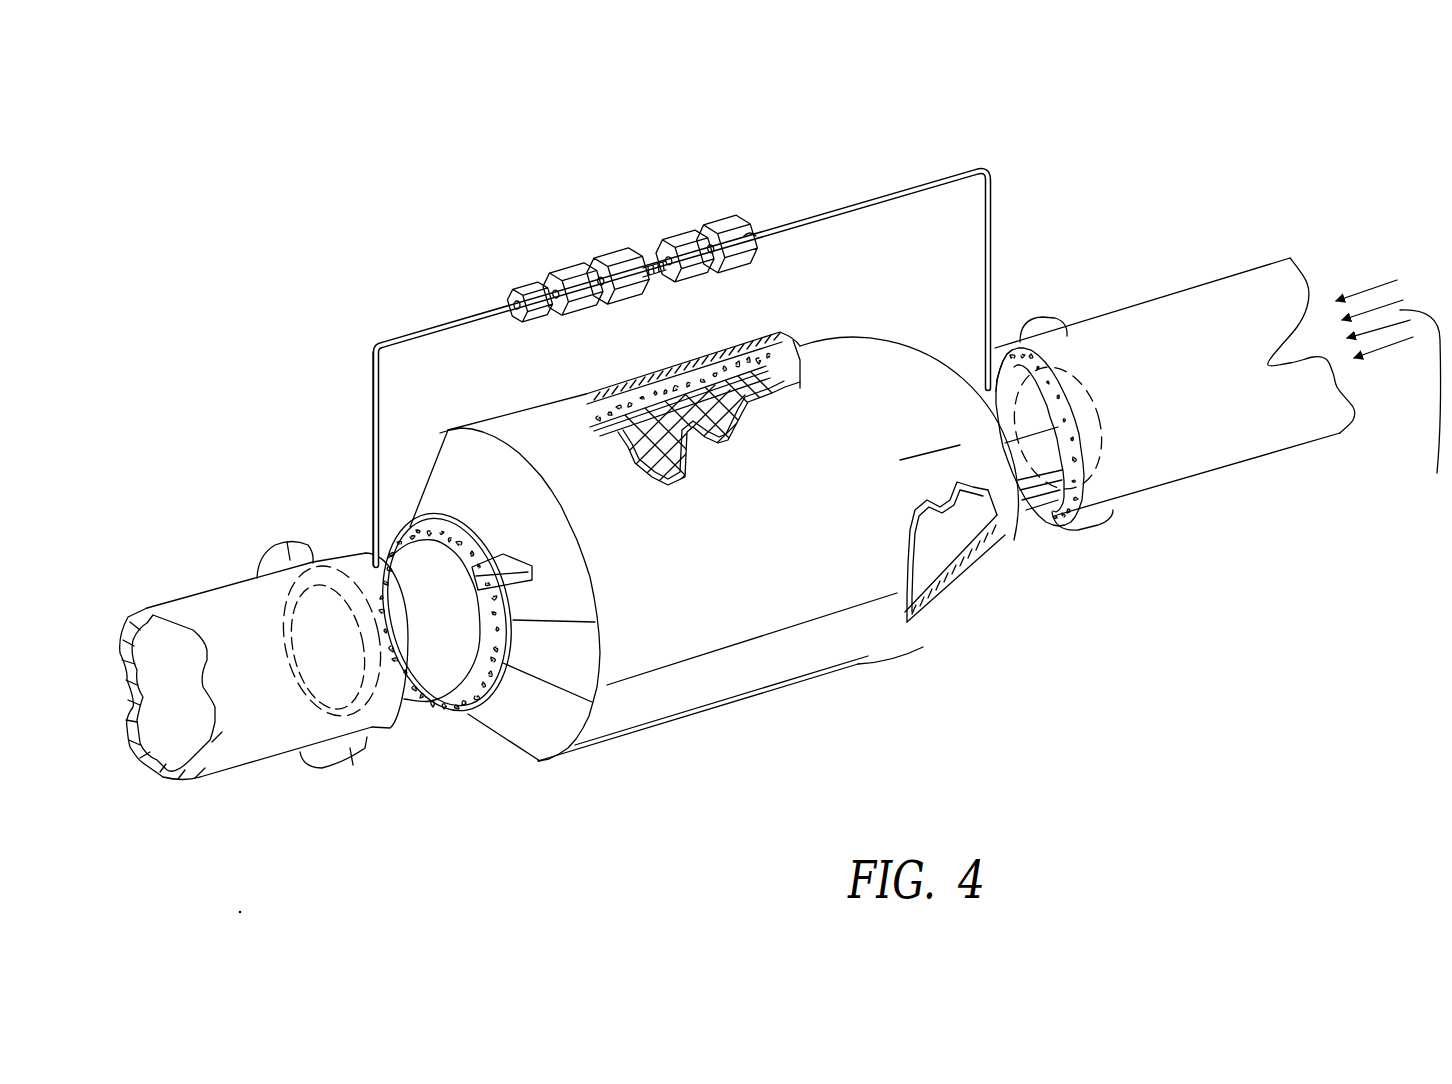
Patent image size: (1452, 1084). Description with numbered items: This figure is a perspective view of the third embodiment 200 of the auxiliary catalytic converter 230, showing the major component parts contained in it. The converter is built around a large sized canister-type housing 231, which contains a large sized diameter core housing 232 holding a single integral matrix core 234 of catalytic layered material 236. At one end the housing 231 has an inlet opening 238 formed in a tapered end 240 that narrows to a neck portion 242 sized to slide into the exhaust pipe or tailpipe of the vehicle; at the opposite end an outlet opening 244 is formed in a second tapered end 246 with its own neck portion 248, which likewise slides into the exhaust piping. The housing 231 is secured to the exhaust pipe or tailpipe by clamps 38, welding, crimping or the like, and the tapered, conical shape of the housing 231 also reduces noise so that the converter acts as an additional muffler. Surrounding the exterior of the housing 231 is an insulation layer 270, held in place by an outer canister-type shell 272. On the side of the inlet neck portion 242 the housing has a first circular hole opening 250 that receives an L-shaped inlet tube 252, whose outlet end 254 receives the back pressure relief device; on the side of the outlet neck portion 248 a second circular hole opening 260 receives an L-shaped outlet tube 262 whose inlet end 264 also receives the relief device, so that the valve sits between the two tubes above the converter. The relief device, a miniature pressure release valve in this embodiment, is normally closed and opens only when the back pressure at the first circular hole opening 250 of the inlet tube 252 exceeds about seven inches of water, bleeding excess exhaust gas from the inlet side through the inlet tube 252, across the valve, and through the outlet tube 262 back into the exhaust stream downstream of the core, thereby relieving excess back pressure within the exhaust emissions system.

The third embodiment 200 is at (300, 327).
The auxiliary catalytic converter 230 is at (507, 757).
The outer canister-type shell 272 is at (603, 396).
The insulation layer 270 is at (765, 357).
The canister-type housing 231 is at (603, 417).
The core housing 232 is at (697, 462).
The single integral matrix core 234 is at (730, 403).
The catalytic layered material 236 is at (840, 397).
The tapered end 240 is at (935, 540).
The tapered end 246 is at (505, 556).
The mounting clamps 38 is at (292, 552).
The second circular hole opening 260 is at (362, 548).
The neck portion 248 is at (400, 570).
The outlet opening 244 is at (331, 675).
The first circular hole opening 250 is at (1005, 385).
The neck portion 242 is at (1053, 513).
The inlet opening 238 is at (1101, 433).
The L-shaped inlet tube 252 is at (989, 182).
The L-shaped outlet tube 262 is at (372, 367).
The inlet end 264 is at (517, 303).
The outlet end 254 is at (750, 233).